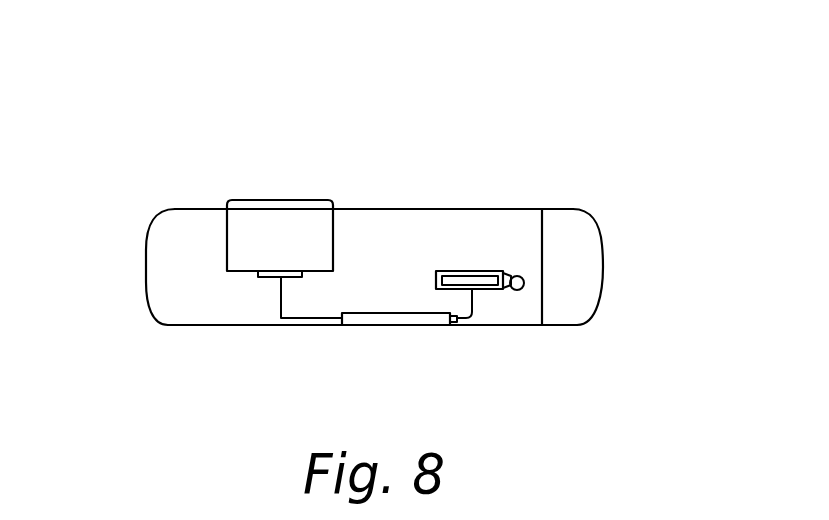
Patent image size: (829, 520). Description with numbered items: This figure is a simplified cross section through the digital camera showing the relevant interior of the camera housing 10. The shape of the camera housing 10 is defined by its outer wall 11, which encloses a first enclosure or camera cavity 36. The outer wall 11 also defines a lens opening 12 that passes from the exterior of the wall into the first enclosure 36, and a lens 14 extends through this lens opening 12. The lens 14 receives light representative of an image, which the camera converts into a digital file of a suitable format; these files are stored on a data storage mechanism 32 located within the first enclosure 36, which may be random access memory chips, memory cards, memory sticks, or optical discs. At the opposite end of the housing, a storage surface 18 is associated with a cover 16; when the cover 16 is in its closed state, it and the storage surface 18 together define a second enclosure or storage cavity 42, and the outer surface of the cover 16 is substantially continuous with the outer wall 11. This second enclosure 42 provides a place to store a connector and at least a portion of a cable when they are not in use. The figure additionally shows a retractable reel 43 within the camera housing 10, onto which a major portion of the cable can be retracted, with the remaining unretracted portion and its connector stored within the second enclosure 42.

The camera housing 10 is at (266, 73).
The outer wall 11 is at (443, 208).
The lens opening 12 is at (334, 205).
The lens 14 is at (255, 233).
The cover 16 is at (595, 227).
The storage surface 18 is at (543, 304).
The data storage mechanism 32 is at (382, 318).
The first enclosure 36 is at (180, 272).
The second enclosure 42 is at (578, 268).
The retractable reel 43 is at (476, 271).